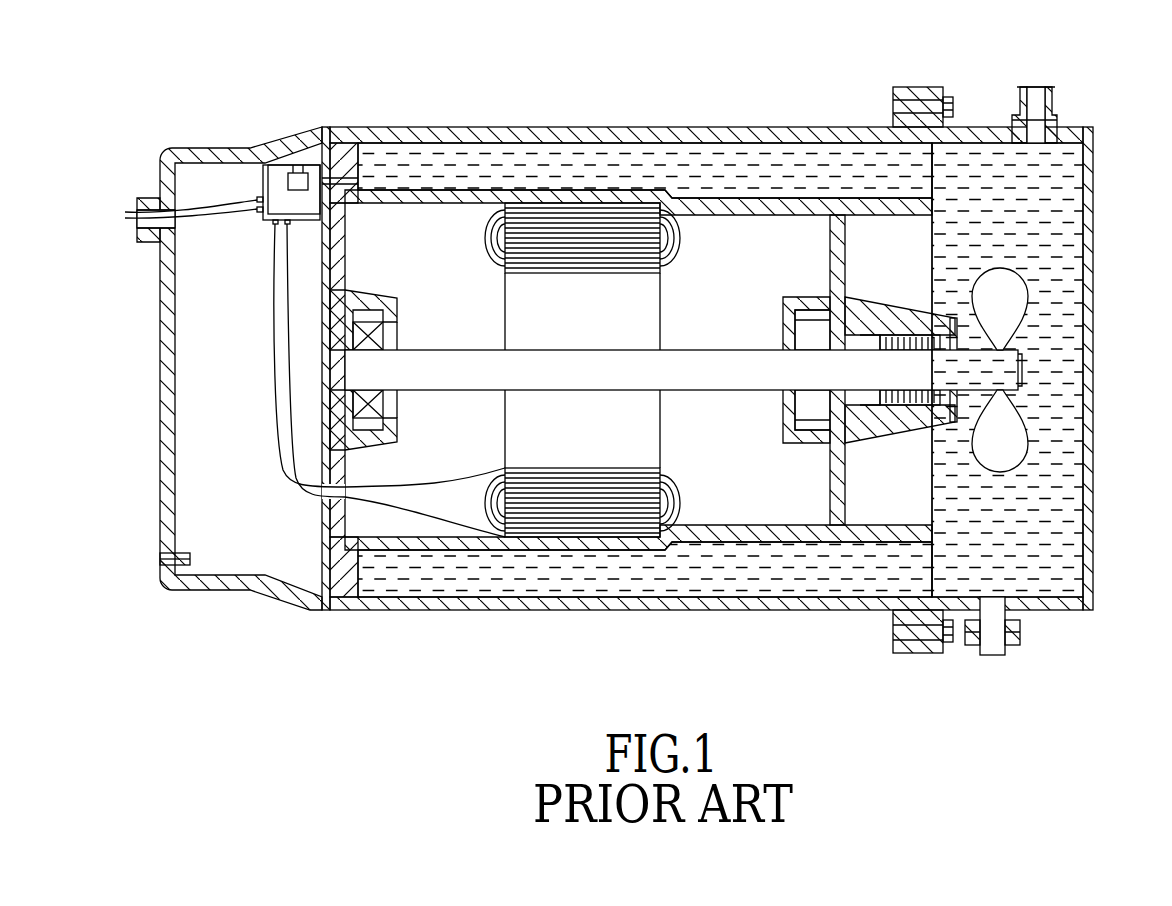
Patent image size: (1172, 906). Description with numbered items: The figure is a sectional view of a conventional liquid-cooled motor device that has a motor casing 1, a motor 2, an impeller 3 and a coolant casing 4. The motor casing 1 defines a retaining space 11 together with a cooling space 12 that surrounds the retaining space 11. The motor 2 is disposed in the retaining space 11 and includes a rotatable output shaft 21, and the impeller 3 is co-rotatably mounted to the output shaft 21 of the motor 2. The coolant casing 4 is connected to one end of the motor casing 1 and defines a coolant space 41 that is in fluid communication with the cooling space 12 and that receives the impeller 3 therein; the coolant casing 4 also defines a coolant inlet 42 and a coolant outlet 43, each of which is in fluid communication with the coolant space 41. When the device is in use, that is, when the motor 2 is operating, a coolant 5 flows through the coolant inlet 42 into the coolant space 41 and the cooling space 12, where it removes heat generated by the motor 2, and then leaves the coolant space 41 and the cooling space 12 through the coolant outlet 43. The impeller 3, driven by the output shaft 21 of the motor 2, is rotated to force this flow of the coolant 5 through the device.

The motor casing 1 is at (549, 123).
The retaining space 11 is at (460, 250).
The cooling space 12 is at (731, 168).
The motor 2 is at (548, 445).
The output shaft 21 is at (752, 375).
The impeller 3 is at (1010, 292).
The coolant casing 4 is at (1090, 506).
The coolant space 41 is at (1050, 195).
The coolant inlet 42 is at (1037, 100).
The coolant outlet 43 is at (993, 612).
The coolant 5 is at (1085, 326).